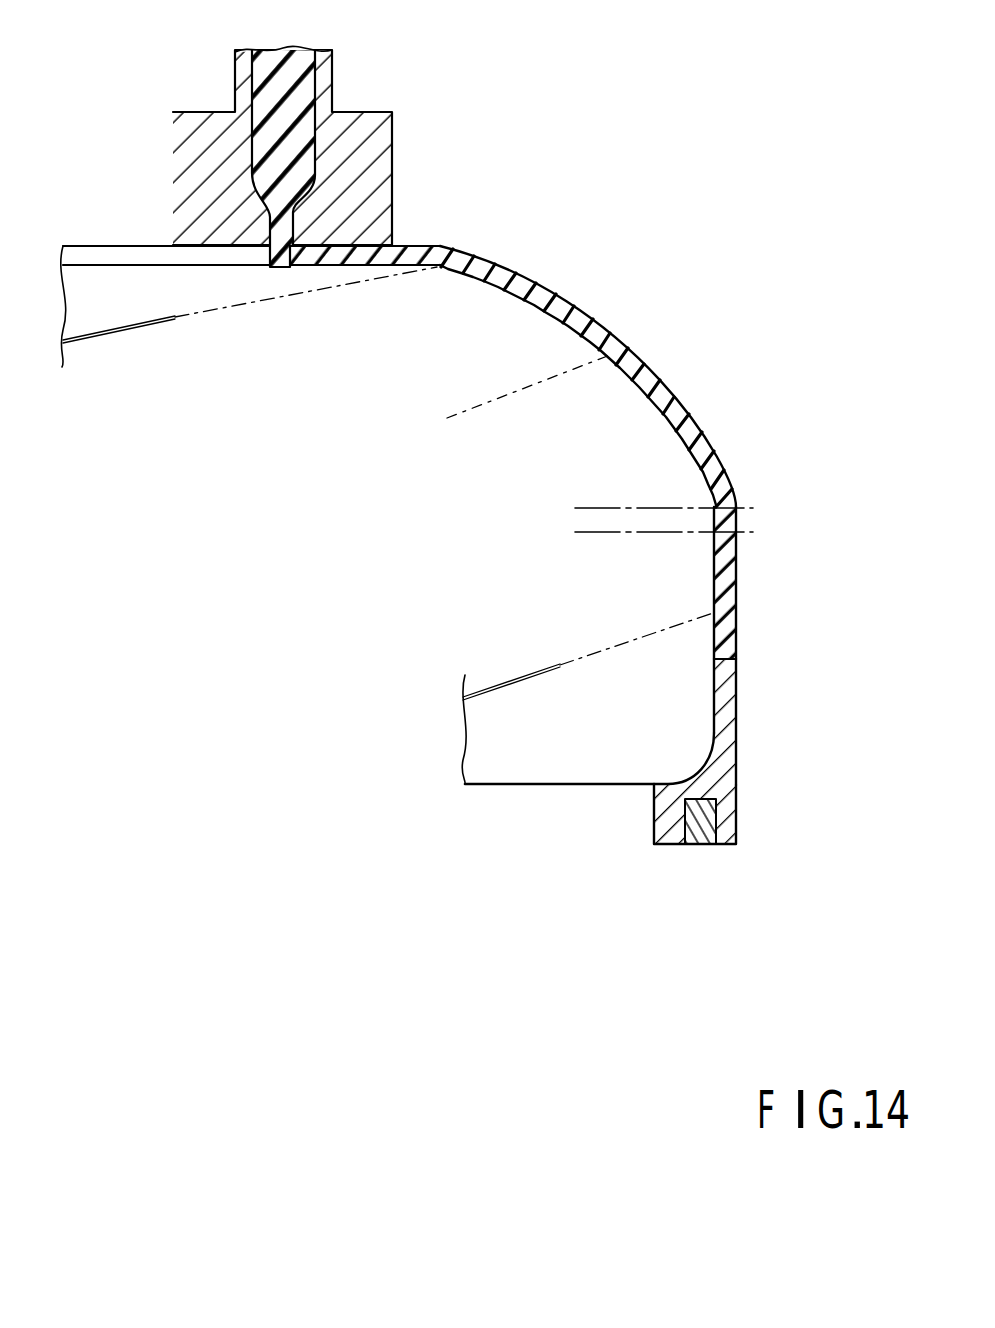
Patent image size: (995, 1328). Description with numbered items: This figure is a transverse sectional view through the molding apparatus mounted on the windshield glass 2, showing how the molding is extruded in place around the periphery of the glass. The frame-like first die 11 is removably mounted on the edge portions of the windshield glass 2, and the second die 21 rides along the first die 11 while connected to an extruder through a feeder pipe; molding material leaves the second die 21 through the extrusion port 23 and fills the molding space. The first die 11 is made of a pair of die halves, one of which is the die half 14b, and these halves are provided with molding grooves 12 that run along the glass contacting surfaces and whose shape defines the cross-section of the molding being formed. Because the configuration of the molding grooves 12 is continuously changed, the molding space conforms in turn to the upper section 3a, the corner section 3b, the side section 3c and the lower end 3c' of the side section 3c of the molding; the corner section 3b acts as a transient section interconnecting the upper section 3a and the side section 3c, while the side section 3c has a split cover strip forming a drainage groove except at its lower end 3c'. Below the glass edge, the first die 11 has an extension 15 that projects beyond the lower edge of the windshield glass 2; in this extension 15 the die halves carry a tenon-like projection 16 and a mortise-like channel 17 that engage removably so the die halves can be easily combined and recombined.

The windshield glass 2 is at (518, 772).
The upper section 3a is at (323, 247).
The corner section 3b is at (647, 373).
The side section 3c is at (757, 583).
The lower end 3c' is at (783, 657).
The first die 11 is at (108, 245).
The molding grooves 12 is at (716, 579).
The die half 14b is at (736, 690).
The extension 15 is at (728, 807).
The tenon-like projection 16 is at (698, 843).
The mortise-like channel 17 is at (696, 866).
The second die 21 is at (190, 177).
The extrusion port 23 is at (390, 132).